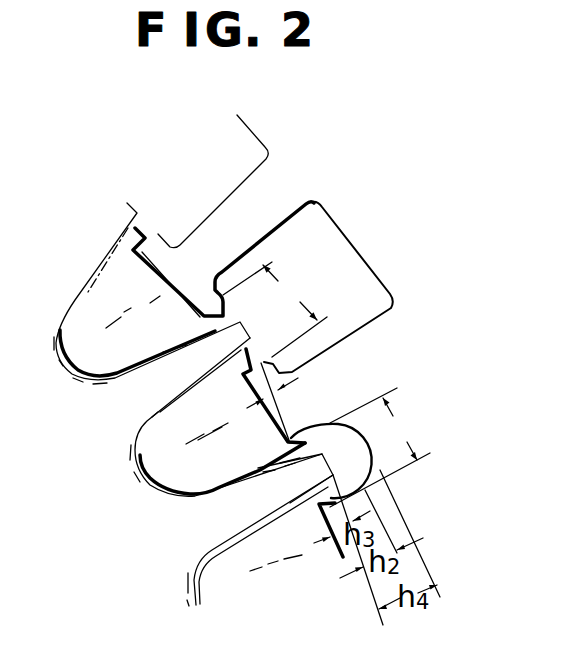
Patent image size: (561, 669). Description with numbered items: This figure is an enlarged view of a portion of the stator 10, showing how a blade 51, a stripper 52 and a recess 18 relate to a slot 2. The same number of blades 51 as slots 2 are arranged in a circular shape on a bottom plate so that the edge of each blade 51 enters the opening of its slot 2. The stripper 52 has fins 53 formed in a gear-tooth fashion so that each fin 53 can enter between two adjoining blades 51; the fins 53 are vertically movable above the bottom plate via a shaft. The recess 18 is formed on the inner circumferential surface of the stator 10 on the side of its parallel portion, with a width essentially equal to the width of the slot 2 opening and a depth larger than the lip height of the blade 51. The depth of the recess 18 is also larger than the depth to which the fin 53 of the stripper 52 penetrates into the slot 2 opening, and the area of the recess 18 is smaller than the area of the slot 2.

The stator 10 is at (320, 176).
The slot 2 is at (340, 259).
The recess 18 is at (350, 463).
The blade 51 is at (136, 231).
The stripper 52 is at (116, 413).
The fin 53 is at (243, 510).